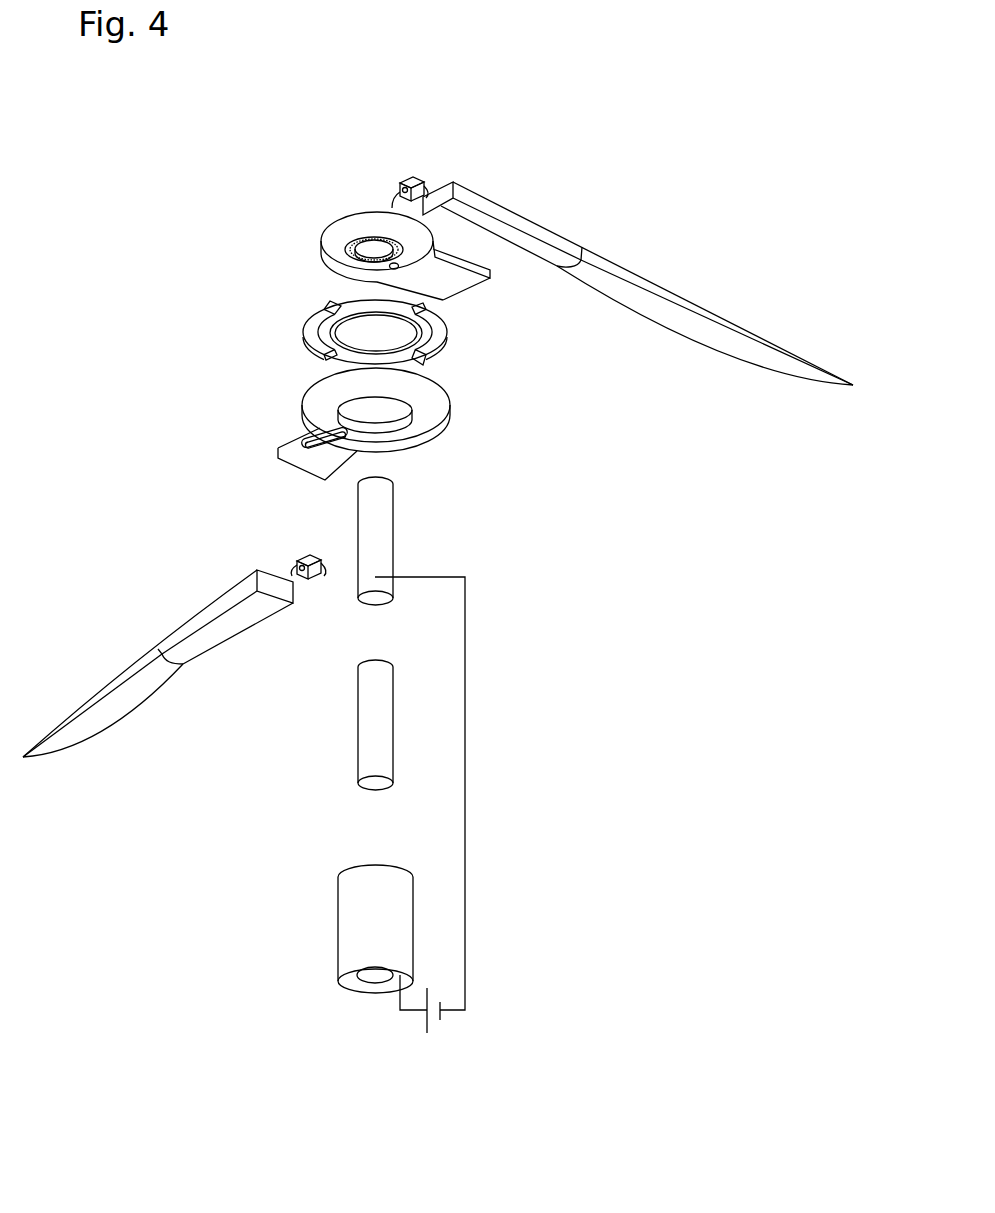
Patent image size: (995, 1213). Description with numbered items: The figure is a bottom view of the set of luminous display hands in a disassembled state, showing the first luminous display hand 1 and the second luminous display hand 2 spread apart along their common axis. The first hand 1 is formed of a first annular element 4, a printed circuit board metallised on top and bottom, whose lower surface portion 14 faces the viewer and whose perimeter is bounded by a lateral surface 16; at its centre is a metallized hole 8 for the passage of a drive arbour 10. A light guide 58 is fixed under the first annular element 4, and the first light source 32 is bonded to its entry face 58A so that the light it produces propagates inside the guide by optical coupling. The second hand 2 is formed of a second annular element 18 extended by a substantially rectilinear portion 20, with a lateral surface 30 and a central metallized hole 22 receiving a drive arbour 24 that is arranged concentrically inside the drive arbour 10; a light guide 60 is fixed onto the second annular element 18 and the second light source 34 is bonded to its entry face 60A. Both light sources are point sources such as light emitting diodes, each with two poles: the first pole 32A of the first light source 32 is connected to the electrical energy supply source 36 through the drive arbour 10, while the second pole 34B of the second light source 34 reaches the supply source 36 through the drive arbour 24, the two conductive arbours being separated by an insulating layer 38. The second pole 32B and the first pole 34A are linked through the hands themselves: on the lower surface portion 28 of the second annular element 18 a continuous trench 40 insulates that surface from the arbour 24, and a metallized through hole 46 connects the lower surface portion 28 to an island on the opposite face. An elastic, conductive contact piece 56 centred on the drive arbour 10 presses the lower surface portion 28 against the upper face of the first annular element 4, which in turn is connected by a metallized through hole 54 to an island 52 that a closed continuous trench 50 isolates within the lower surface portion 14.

The first luminous display hand 1 is at (158, 663).
The second luminous display hand 2 is at (638, 247).
The first annular element 4 is at (375, 451).
The hole 8 is at (379, 418).
The drive arbour 10 is at (347, 940).
The lower surface portion 14 is at (368, 451).
The lateral surface 16 is at (412, 376).
The second annular element 18 is at (382, 220).
The portion 20 is at (638, 274).
The hole 22 is at (369, 256).
The drive arbour 24 is at (372, 538).
The lower surface portion 28 is at (338, 251).
The lateral surface 30 is at (382, 220).
The first light source 32 is at (311, 579).
The first pole 32A is at (295, 563).
The second pole 32B is at (325, 575).
The second light source 34 is at (451, 147).
The first pole 34A is at (395, 195).
The second pole 34B is at (424, 186).
The electrical energy supply source 36 is at (411, 1035).
The insulating layer 38 is at (363, 750).
The continuous trench 40 is at (345, 245).
The metallized through hole 46 is at (398, 268).
The continuous trench 50 is at (284, 460).
The island 52 is at (325, 444).
The metallized through hole 54 is at (312, 438).
The contact piece 56 is at (442, 337).
The light guide 58 is at (158, 663).
The entry face 58A is at (275, 585).
The light guide 60 is at (638, 282).
The entry face 60A is at (438, 198).